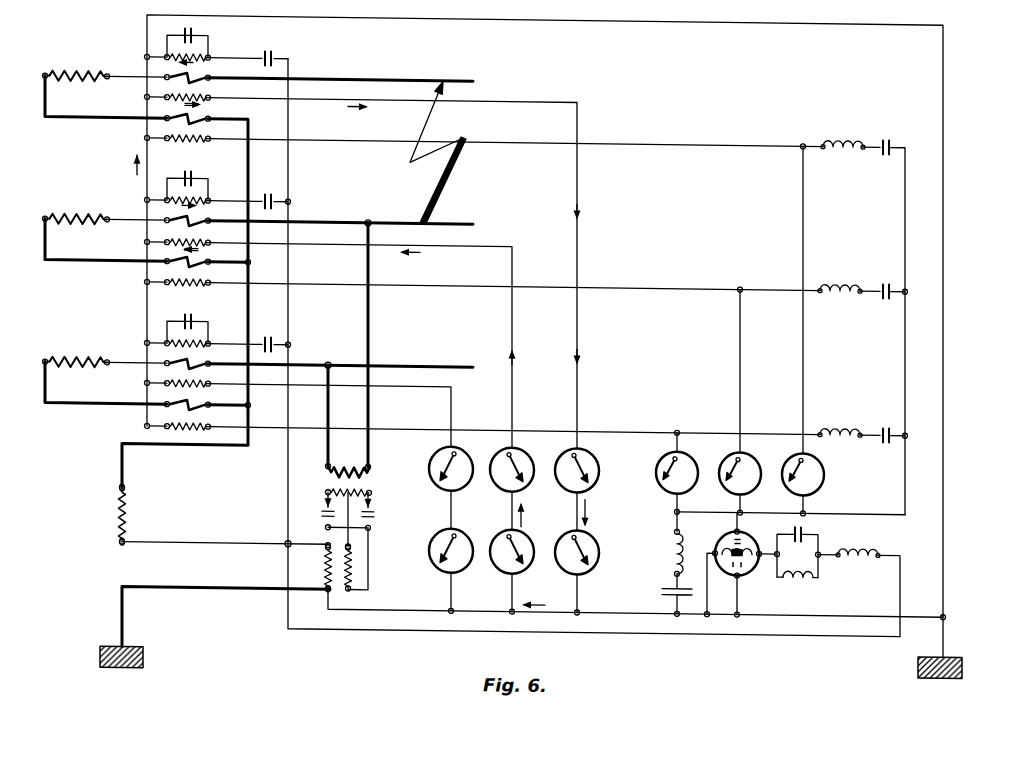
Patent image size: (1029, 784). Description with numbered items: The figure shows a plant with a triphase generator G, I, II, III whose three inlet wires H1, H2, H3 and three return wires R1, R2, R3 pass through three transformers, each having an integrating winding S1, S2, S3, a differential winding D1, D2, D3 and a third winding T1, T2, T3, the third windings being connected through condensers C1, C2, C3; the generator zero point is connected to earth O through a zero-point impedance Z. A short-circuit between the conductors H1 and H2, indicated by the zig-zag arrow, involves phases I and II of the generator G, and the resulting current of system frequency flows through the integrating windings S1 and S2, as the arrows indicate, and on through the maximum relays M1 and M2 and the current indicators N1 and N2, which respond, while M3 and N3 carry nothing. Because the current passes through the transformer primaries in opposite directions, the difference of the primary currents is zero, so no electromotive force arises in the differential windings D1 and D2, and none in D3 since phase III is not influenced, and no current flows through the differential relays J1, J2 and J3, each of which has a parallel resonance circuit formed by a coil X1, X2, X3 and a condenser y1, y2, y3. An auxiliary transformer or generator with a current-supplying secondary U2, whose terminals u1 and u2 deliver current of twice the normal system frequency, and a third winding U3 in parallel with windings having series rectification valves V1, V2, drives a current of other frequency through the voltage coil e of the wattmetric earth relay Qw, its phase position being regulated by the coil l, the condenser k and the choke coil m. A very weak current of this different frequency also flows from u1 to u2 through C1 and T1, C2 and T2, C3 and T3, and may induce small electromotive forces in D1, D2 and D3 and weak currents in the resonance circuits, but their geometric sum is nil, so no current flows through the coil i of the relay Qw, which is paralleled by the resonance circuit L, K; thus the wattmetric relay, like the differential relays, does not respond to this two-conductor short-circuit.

The triphase generator G is at (73, 185).
The generator phase I is at (105, 94).
The generator phase II is at (105, 236).
The generator phase III is at (105, 380).
The third transformer winding T1 is at (198, 50).
The third transformer winding T2 is at (198, 196).
The third transformer winding T3 is at (198, 340).
The condenser C1 is at (268, 47).
The condenser C2 is at (267, 190).
The condenser C3 is at (266, 334).
The inlet wire H1 is at (403, 72).
The inlet wire H2 is at (386, 216).
The inlet wire H3 is at (403, 360).
The integrating winding S1 is at (162, 114).
The integrating winding S2 is at (162, 258).
The integrating winding S3 is at (162, 401).
The return wire R1 is at (258, 109).
The return wire R2 is at (249, 260).
The return wire R3 is at (249, 403).
The differential winding D1 is at (185, 140).
The differential winding D2 is at (185, 285).
The differential winding D3 is at (168, 427).
The zero-point impedance Z is at (118, 514).
The rectification valve V1 is at (322, 504).
The rectification valve V2 is at (372, 503).
The secondary terminal u1 is at (324, 544).
The secondary terminal u2 is at (331, 588).
The current-supplying secondary U2 is at (322, 569).
The third winding U3 is at (360, 541).
The maximum relay M1 is at (577, 486).
The maximum relay M2 is at (512, 486).
The maximum relay M3 is at (449, 486).
The current indicator N1 is at (577, 568).
The current indicator N2 is at (512, 568).
The current indicator N3 is at (449, 568).
The differential relay J1 is at (803, 331).
The differential relay J2 is at (740, 402).
The differential relay J3 is at (677, 474).
The resonance circuit coil X1 is at (840, 135).
The resonance circuit coil X2 is at (845, 269).
The resonance circuit coil X3 is at (845, 412).
The resonance circuit condenser y1 is at (885, 134).
The resonance circuit condenser y2 is at (885, 278).
The resonance circuit condenser y3 is at (885, 421).
The resonance circuit coil L is at (672, 547).
The resonance circuit condenser K is at (665, 583).
The wattmetric earth relay Qw is at (745, 562).
The current coil i is at (724, 538).
The voltage coil e is at (750, 531).
The condenser k is at (801, 530).
The coil l is at (793, 571).
The choke coil m is at (863, 549).
The earth connection O is at (135, 645).